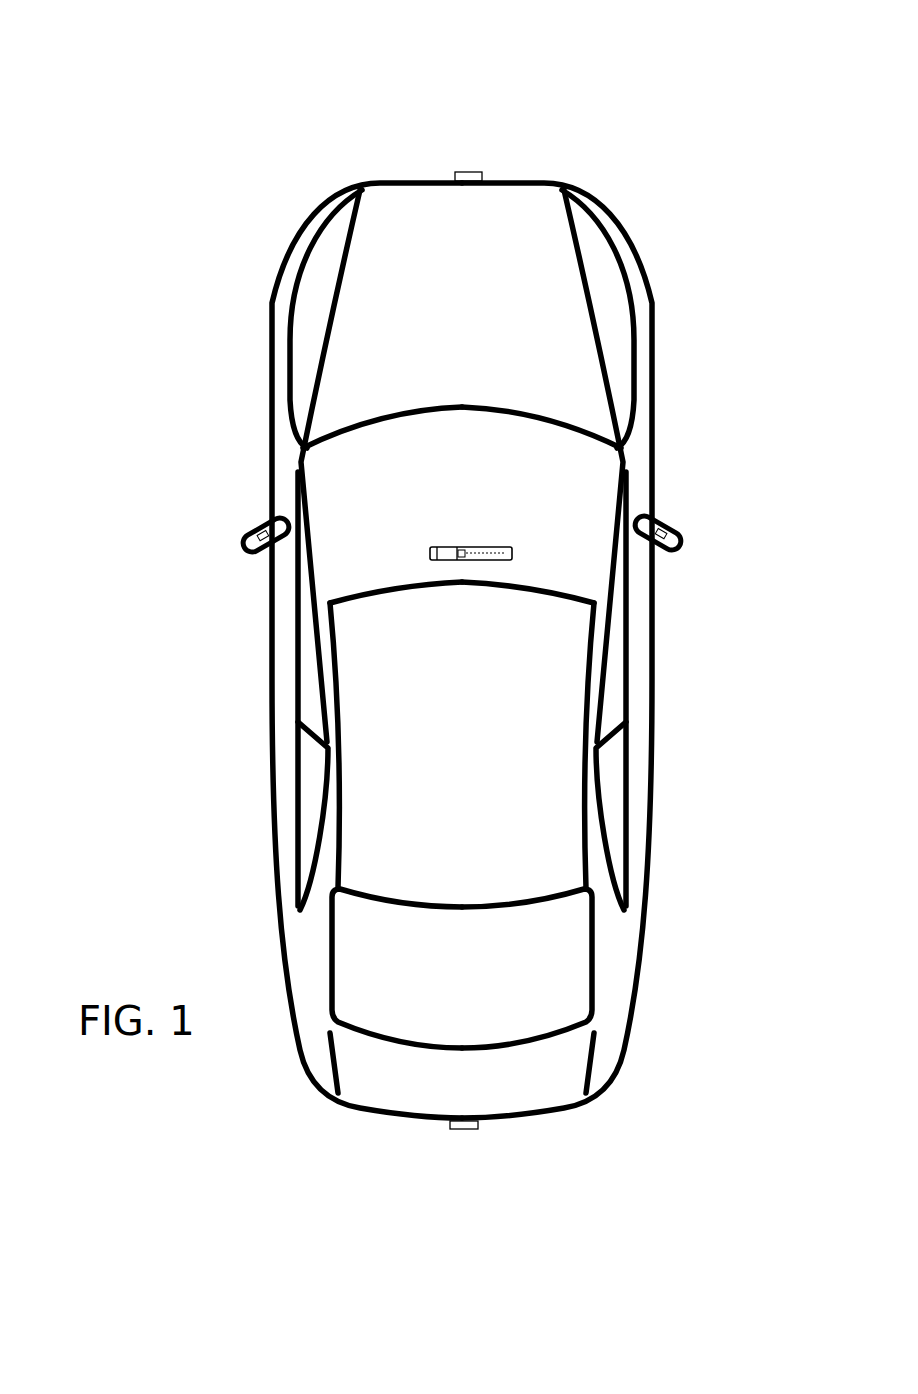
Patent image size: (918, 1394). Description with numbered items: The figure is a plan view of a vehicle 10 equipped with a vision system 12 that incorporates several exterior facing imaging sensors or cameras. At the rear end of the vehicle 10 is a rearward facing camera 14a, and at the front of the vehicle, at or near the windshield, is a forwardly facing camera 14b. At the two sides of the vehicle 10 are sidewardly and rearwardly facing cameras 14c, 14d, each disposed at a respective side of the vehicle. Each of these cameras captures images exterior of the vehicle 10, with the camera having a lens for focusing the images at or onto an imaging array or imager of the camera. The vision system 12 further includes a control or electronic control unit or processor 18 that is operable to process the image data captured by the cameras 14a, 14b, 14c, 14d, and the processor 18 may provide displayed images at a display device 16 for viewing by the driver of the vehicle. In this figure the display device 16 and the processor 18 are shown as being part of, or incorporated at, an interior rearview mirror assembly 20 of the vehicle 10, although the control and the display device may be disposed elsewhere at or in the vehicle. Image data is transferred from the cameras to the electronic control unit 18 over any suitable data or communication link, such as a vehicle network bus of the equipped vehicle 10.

The vehicle 10 is at (222, 259).
The vision system 12 is at (415, 1148).
The rearward facing camera 14a is at (467, 1127).
The forwardly facing camera 14b is at (470, 172).
The sidewardly/rearwardly facing camera 14c is at (262, 528).
The sidewardly/rearwardly facing camera 14d is at (668, 522).
The display device 16 is at (447, 548).
The electronic control unit 18 is at (470, 547).
The interior rearview mirror assembly 20 is at (513, 547).